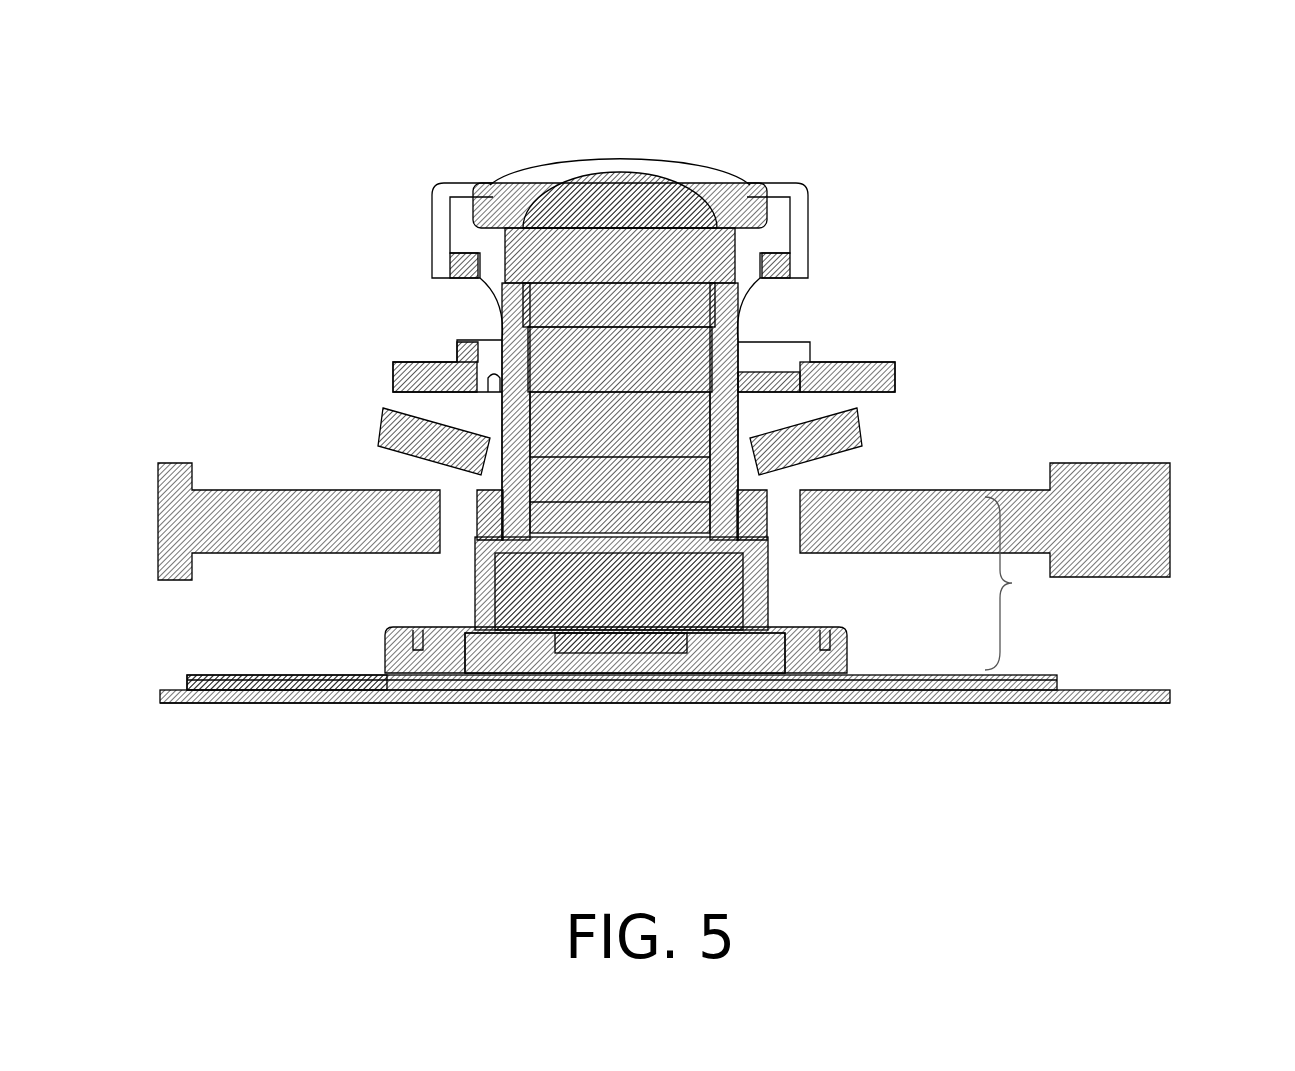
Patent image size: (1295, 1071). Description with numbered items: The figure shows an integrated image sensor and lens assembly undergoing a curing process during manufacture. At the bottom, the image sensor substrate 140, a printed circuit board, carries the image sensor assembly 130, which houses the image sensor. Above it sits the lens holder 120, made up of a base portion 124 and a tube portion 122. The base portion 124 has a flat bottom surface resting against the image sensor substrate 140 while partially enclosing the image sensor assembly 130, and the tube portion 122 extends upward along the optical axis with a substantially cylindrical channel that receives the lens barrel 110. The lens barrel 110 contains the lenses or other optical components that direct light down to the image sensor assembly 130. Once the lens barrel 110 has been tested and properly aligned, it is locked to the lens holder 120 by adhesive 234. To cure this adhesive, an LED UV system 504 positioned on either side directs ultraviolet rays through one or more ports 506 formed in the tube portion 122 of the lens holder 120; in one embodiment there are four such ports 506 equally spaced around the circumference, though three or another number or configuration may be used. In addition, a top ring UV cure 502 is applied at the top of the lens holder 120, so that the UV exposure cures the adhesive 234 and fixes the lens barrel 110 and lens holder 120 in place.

The lens barrel 110 is at (490, 302).
The top ring UV cure 502 is at (905, 425).
The LED UV system 504 is at (1195, 525).
The port 506 is at (478, 522).
The tube portion 122 is at (485, 610).
The adhesive 234 is at (740, 525).
The base portion 124 is at (385, 650).
The image sensor assembly 130 is at (545, 657).
The image sensor substrate 140 is at (192, 680).
The lens holder 120 is at (1022, 583).